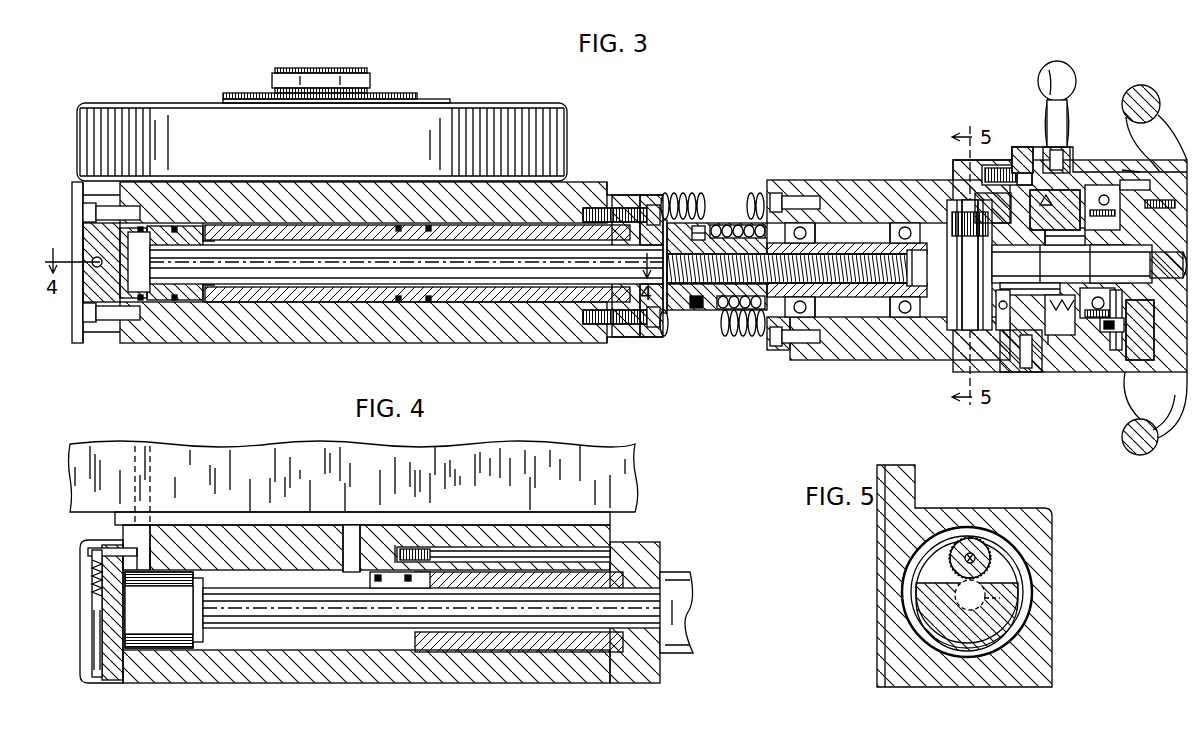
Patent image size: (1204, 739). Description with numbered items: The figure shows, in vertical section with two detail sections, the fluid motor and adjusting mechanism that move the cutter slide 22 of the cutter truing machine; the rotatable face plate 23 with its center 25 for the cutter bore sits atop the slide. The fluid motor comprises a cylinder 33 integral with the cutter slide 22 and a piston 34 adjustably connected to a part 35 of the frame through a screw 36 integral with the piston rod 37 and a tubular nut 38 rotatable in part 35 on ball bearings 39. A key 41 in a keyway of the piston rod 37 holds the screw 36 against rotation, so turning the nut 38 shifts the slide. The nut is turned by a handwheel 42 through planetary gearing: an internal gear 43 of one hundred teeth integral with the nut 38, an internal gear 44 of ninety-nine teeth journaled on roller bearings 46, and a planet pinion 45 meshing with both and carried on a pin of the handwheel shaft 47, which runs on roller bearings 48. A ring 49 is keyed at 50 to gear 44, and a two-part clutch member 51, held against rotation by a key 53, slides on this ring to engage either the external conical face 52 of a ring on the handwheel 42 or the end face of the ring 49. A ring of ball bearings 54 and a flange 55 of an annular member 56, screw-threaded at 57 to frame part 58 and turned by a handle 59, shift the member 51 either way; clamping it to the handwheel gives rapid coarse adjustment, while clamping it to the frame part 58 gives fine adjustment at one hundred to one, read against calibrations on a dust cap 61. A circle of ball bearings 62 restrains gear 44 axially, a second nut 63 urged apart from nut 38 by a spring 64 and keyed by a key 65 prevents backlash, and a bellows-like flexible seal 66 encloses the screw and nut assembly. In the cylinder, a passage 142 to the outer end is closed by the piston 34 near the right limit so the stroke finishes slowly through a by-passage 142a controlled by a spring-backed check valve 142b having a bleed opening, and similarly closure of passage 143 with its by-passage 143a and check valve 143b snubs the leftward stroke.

In FIG. 3, the cutter slide 22 is at (626, 342).
In FIG. 4, the cutter slide 22 is at (310, 492).
In FIG. 3, the face plate 23 is at (337, 153).
In FIG. 3, the center 25 is at (330, 76).
In FIG. 3, the cylinder 33 is at (511, 330).
In FIG. 4, the cylinder 33 is at (249, 666).
In FIG. 3, the piston 34 is at (165, 298).
In FIG. 4, the piston 34 is at (136, 620).
In FIG. 3, the part of frame 35 is at (860, 340).
In FIG. 5, the part of frame 35 is at (1036, 535).
In FIG. 3, the screw 36 is at (730, 286).
In FIG. 3, the piston rod 37 is at (313, 292).
In FIG. 4, the piston rod 37 is at (334, 622).
In FIG. 3, the tubular nut 38 is at (697, 303).
In FIG. 3, the ball bearings 39 is at (903, 229).
In FIG. 4, the key 41 is at (672, 590).
In FIG. 3, the handwheel 42 is at (1152, 441).
In FIG. 3, the internal gear 43 is at (960, 213).
In FIG. 5, the internal gear 43 is at (960, 538).
In FIG. 3, the internal gear 44 is at (975, 227).
In FIG. 3, the planet pinion 45 is at (968, 212).
In FIG. 5, the planet pinion 45 is at (978, 550).
In FIG. 3, the roller bearings 46 is at (1035, 312).
In FIG. 3, the shaft 47 is at (1148, 268).
In FIG. 5, the shaft 47 is at (1010, 595).
In FIG. 3, the roller bearings 48 is at (937, 292).
In FIG. 3, the ring 49 is at (1066, 373).
In FIG. 3, the key 50 is at (1080, 232).
In FIG. 3, the two-part clutch member 51 is at (1114, 356).
In FIG. 3, the external conical face 52 is at (1138, 364).
In FIG. 3, the key 53 is at (1093, 215).
In FIG. 3, the ring of ball bearings 54 is at (1113, 358).
In FIG. 3, the flange 55 is at (1100, 342).
In FIG. 3, the annular member 56 is at (1022, 152).
In FIG. 3, the screw thread 57 is at (1030, 373).
In FIG. 3, the part of frame 58 is at (1073, 205).
In FIG. 3, the handle 59 is at (1053, 72).
In FIG. 3, the dust cap 61 is at (1122, 168).
In FIG. 3, the circle of ball bearings 62 is at (998, 342).
In FIG. 3, the second nut 63 is at (676, 232).
In FIG. 3, the spring 64 is at (738, 227).
In FIG. 3, the key 65 is at (700, 230).
In FIG. 3, the bellows-like flexible seal 66 is at (752, 334).
In FIG. 4, the passage 142 is at (143, 545).
In FIG. 4, the by-passage 142a is at (110, 606).
In FIG. 4, the spring-backed check valve 142b is at (92, 590).
In FIG. 4, the passage 143 is at (365, 548).
In FIG. 4, the by-passage 143a is at (385, 575).
In FIG. 4, the spring-backed check valve 143b is at (405, 553).